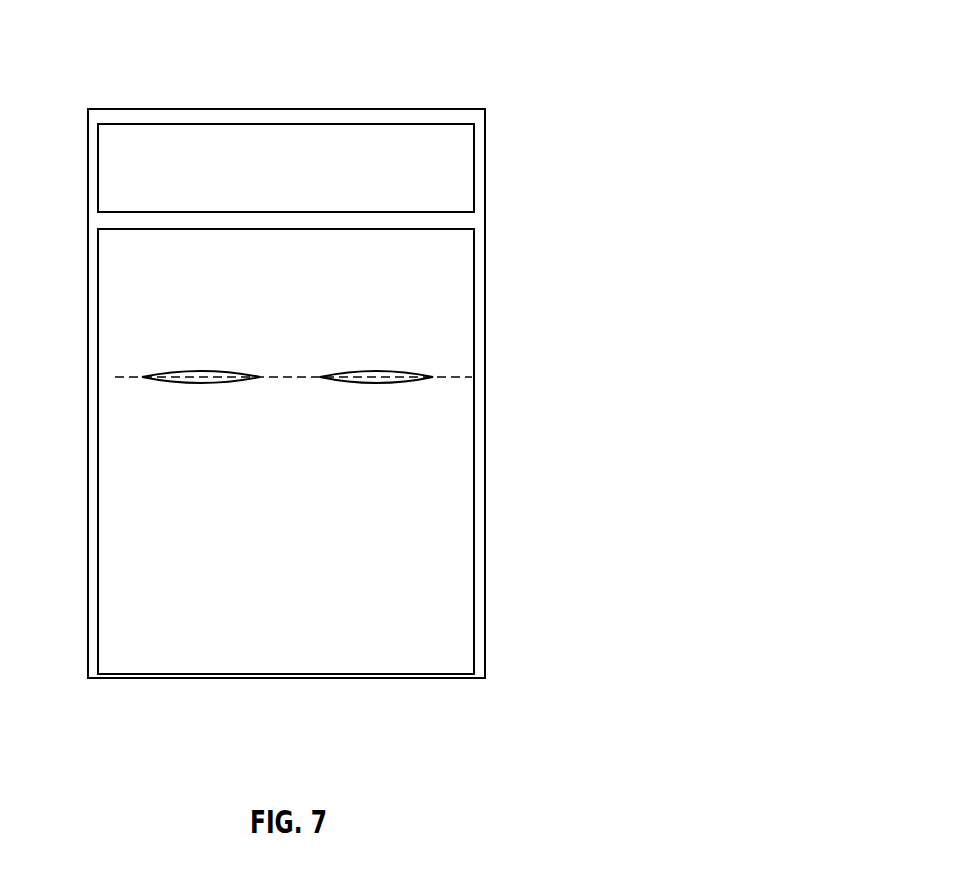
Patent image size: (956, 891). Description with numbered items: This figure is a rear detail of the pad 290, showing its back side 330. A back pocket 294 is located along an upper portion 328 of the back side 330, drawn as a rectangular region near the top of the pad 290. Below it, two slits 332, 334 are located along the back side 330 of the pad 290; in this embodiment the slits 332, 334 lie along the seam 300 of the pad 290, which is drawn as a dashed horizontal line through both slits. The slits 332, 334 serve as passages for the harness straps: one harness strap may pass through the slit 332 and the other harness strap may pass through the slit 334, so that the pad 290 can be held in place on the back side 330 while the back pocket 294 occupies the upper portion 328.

The pad 290 is at (544, 29).
The upper portion 328 is at (487, 160).
The back side 330 is at (430, 277).
The back pocket 294 is at (160, 229).
The seam 300 is at (453, 378).
The slit 332 is at (200, 383).
The slit 334 is at (375, 382).